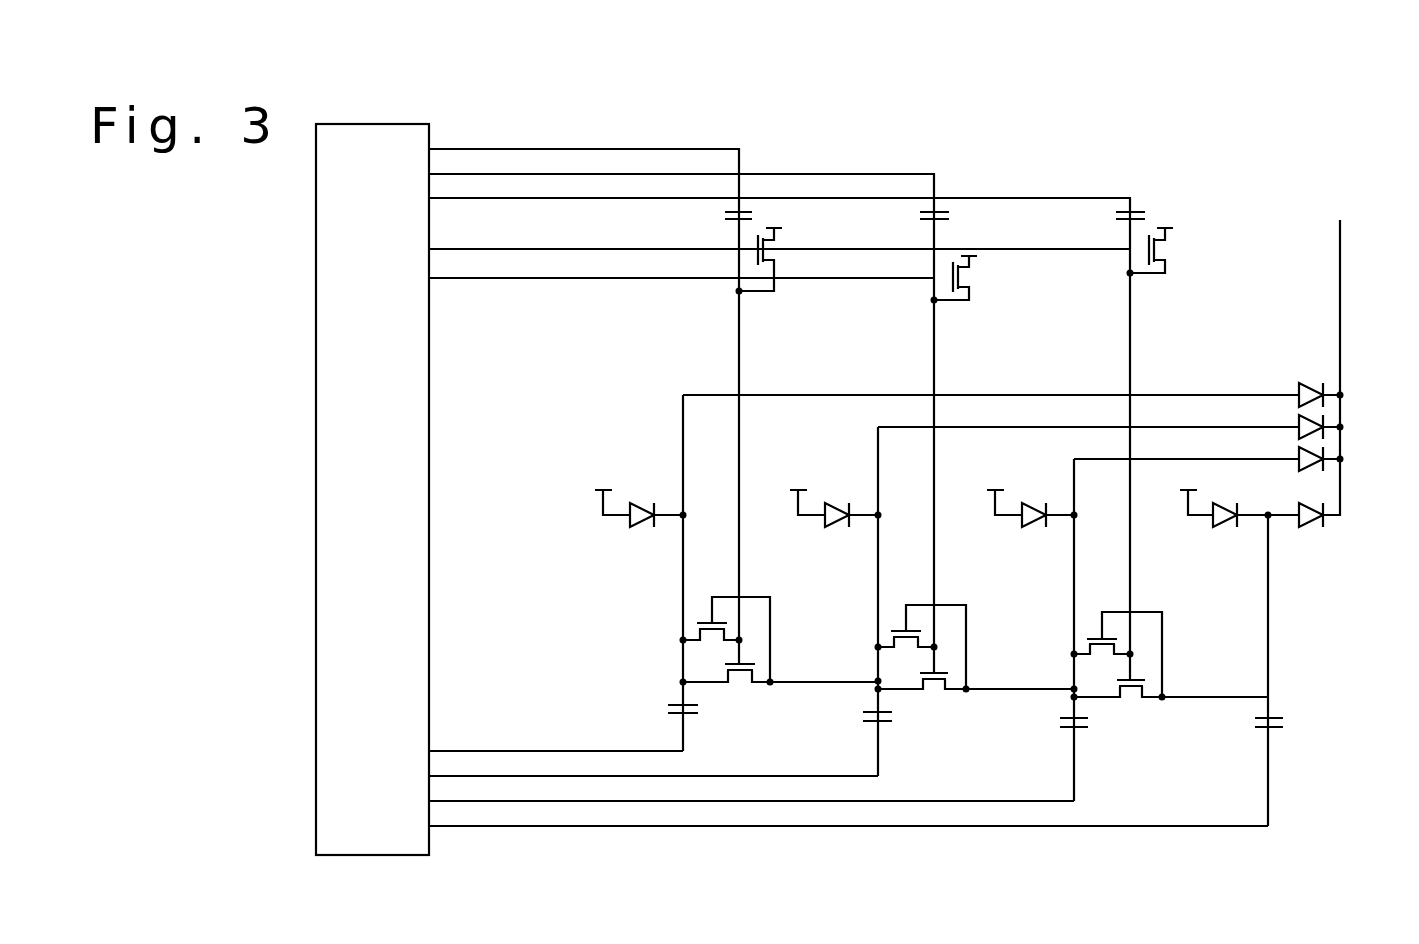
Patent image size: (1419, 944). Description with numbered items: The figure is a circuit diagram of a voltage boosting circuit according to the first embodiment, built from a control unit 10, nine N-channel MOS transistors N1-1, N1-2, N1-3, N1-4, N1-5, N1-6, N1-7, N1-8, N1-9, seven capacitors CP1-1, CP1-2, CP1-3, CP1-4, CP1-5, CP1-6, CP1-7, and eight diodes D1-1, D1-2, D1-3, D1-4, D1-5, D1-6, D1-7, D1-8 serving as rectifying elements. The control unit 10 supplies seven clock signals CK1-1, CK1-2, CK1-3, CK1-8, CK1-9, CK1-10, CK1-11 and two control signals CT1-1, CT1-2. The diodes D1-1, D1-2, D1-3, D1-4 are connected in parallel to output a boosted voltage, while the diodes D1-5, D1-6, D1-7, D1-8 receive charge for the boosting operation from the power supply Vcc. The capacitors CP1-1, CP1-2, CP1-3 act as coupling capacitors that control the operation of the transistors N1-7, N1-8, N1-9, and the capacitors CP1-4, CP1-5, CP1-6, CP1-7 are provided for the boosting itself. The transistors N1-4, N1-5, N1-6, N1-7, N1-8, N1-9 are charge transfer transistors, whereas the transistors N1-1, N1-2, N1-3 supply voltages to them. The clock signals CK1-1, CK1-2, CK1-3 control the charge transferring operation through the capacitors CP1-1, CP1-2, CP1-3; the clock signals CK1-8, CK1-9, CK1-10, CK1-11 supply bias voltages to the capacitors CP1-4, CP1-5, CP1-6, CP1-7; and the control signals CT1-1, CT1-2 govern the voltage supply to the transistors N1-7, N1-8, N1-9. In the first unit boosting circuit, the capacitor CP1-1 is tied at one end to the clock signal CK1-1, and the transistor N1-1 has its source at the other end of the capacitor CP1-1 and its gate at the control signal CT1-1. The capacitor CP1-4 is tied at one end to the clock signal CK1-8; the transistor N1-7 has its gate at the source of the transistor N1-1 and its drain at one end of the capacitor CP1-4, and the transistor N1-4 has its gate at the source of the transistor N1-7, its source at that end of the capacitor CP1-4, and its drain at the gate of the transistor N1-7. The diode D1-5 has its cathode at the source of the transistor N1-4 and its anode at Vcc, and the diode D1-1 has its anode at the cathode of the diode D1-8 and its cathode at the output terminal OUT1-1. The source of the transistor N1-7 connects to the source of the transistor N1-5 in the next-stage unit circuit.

The control unit 10 is at (316, 365).
The clock signal CK1-1 is at (584, 395).
The clock signal CK1-2 is at (681, 412).
The clock signal CK1-3 is at (779, 428).
The control signal CT1-1 is at (779, 239).
The control signal CT1-2 is at (681, 268).
The clock signal CK1-8 is at (556, 741).
The clock signal CK1-9 is at (653, 766).
The clock signal CK1-10 is at (751, 791).
The clock signal CK1-11 is at (848, 816).
The output terminal OUT1-1 is at (1340, 354).
The capacitor CP1-1 is at (704, 216).
The capacitor CP1-2 is at (899, 216).
The capacitor CP1-3 is at (1095, 216).
The capacitor CP1-4 is at (675, 717).
The capacitor CP1-5 is at (868, 723).
The capacitor CP1-6 is at (1065, 729).
The capacitor CP1-7 is at (1260, 729).
The N-channel transistor N1-1 is at (775, 255).
The N-channel transistor N1-2 is at (974, 277).
The N-channel transistor N1-3 is at (1170, 258).
The N-channel transistor N1-4 is at (703, 620).
The N-channel transistor N1-5 is at (898, 627).
The N-channel transistor N1-6 is at (1095, 635).
The N-channel transistor N1-7 is at (737, 684).
The N-channel transistor N1-8 is at (933, 690).
The N-channel transistor N1-9 is at (1128, 698).
The diode D1-1 is at (1312, 500).
The diode D1-2 is at (1312, 444).
The diode D1-3 is at (1312, 412).
The diode D1-4 is at (1312, 380).
The diode D1-5 is at (627, 522).
The diode D1-6 is at (822, 522).
The diode D1-7 is at (1019, 522).
The diode D1-8 is at (1213, 522).